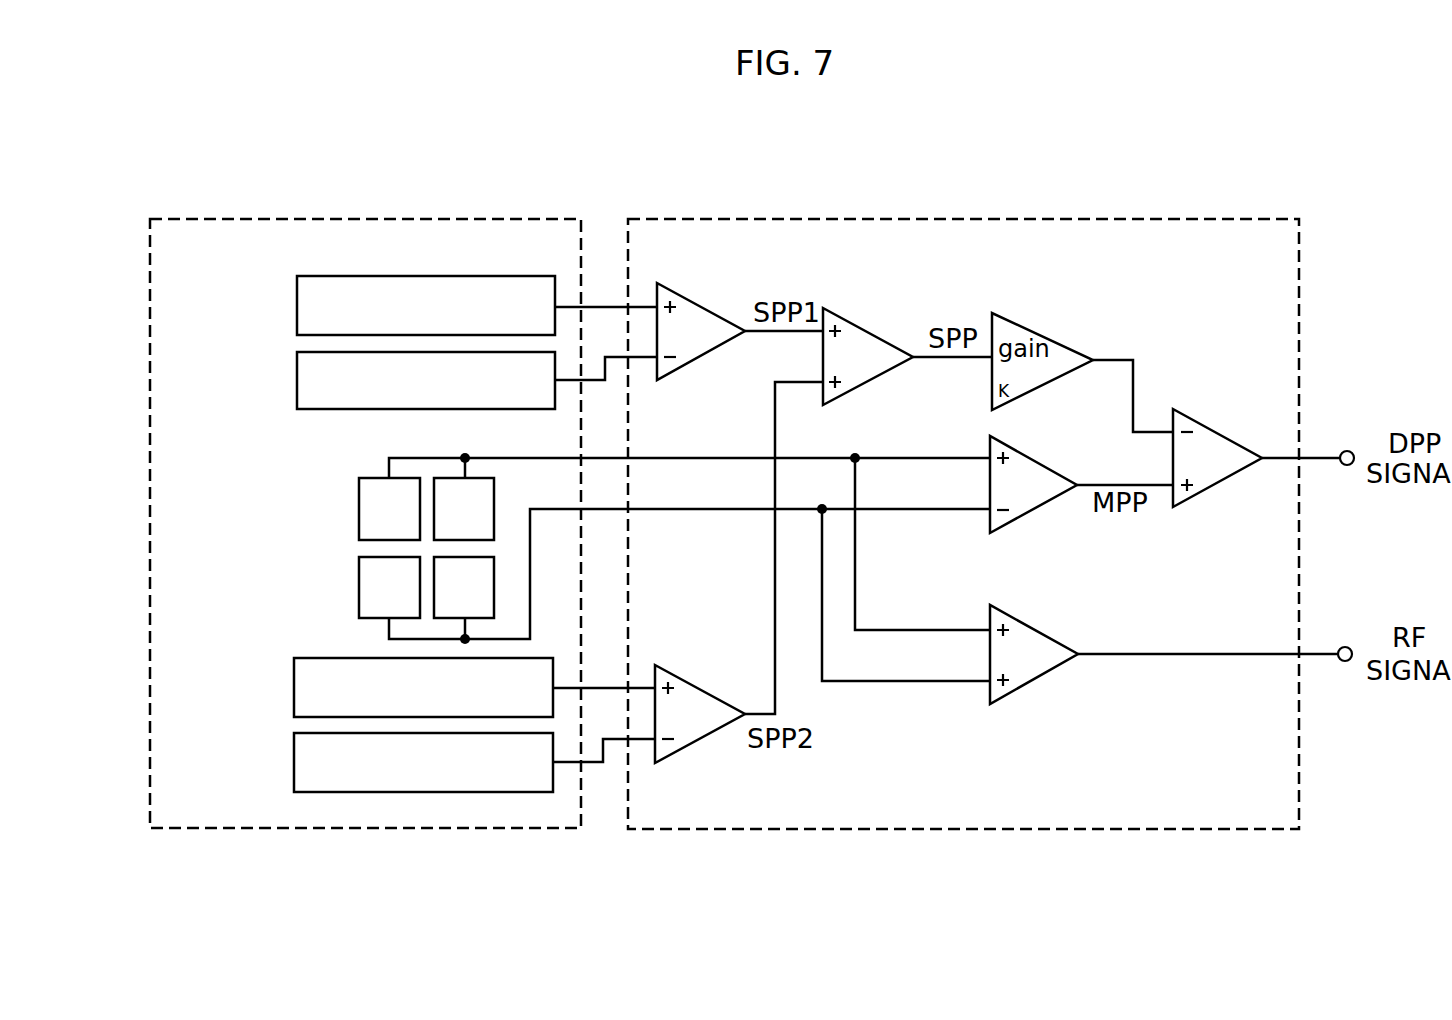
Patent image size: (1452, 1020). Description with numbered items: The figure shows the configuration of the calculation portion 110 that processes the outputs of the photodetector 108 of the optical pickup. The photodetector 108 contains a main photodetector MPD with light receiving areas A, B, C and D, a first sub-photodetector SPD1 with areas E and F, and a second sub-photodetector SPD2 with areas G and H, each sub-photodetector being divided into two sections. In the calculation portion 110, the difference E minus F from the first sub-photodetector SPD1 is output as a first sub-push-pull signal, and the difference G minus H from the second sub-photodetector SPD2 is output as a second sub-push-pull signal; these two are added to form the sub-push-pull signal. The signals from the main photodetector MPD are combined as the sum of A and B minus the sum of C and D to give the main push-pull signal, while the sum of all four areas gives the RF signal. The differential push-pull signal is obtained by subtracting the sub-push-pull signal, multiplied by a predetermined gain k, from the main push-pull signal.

The photodetector 108 is at (368, 218).
The calculation portion 110 is at (972, 218).
The first sub-photodetector SPD1 is at (283, 313).
The second sub-photodetector SPD2 is at (282, 695).
The main photodetector MPD is at (347, 526).